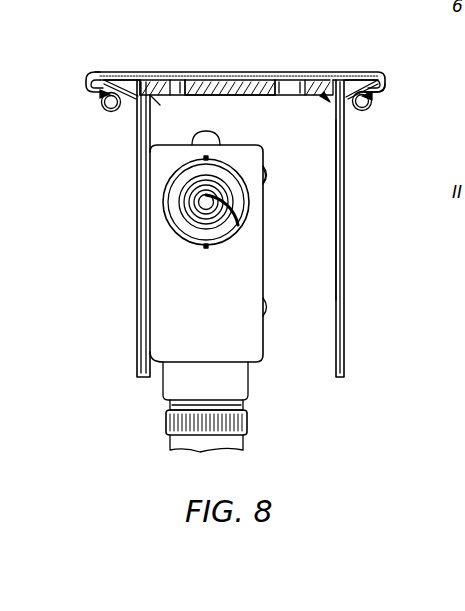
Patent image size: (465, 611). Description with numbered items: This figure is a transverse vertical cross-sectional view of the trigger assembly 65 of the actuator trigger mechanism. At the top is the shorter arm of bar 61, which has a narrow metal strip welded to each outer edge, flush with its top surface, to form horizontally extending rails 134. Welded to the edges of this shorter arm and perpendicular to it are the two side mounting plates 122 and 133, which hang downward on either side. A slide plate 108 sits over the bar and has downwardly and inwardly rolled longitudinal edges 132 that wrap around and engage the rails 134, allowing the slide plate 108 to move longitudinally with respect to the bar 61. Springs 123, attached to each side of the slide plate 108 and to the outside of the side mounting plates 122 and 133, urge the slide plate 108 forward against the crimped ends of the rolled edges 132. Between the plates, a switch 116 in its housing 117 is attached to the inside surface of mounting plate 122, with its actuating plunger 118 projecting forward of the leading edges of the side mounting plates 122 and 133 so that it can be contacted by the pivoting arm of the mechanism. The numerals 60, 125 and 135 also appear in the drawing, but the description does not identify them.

The camera unit 60 is at (343, 206).
The bar 61 is at (240, 92).
The trigger assembly 65 is at (242, 68).
The slide plate 108 is at (306, 73).
The switch 116 is at (265, 168).
The housing 117 is at (260, 244).
The actuating plunger 118 is at (210, 206).
The side mounting plate 122 is at (137, 210).
The springs 123 is at (102, 108).
The connector 125 is at (250, 428).
The rolled edges 132 is at (88, 88).
The side mounting plate 133 is at (344, 274).
The rails 134 is at (130, 58).
The spring arm 135 is at (134, 100).